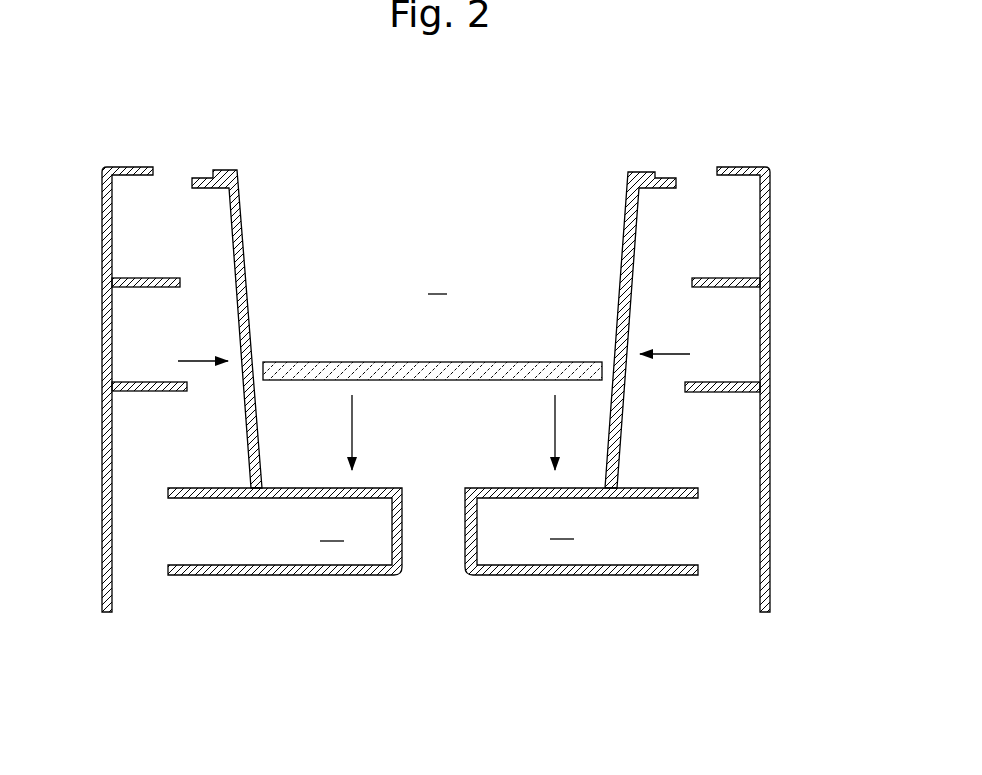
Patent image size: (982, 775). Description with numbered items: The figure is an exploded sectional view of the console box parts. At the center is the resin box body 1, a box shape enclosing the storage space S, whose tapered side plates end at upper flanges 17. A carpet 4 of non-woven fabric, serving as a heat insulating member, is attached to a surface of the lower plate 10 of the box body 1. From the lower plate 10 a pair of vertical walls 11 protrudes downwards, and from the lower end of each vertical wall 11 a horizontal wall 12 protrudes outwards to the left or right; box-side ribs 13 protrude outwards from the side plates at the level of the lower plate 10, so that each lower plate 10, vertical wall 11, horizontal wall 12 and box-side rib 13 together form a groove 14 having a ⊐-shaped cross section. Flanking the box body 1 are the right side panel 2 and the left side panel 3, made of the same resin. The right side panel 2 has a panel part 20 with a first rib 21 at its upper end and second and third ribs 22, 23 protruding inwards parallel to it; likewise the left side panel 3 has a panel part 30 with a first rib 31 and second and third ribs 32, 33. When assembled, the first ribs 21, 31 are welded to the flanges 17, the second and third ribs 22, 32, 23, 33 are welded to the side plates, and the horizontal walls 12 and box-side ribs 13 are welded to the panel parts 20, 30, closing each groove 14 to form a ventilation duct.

The box body 1 is at (434, 292).
The right side panel 2 is at (784, 362).
The left side panel 3 is at (111, 354).
The carpet 4 is at (330, 367).
The lower plate 10 is at (433, 537).
The vertical wall 11 is at (433, 576).
The horizontal wall 12 is at (257, 567).
The box-side rib 13 is at (433, 537).
The groove 14 is at (446, 529).
The flange 17 is at (202, 185).
The panel part 20 is at (799, 362).
The first rib 21 is at (732, 166).
The second rib 22 is at (713, 282).
The third rib 23 is at (728, 386).
The panel part 30 is at (97, 354).
The first rib 31 is at (135, 171).
The second rib 32 is at (145, 282).
The third rib 33 is at (160, 385).
The storage space S is at (437, 283).